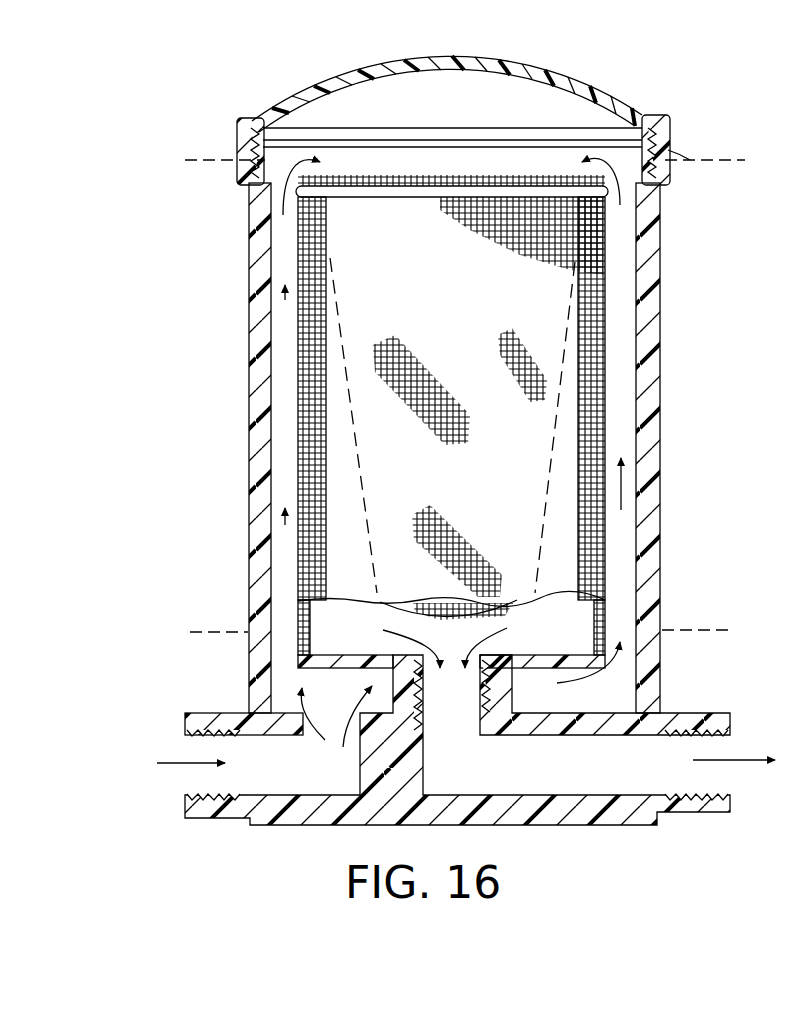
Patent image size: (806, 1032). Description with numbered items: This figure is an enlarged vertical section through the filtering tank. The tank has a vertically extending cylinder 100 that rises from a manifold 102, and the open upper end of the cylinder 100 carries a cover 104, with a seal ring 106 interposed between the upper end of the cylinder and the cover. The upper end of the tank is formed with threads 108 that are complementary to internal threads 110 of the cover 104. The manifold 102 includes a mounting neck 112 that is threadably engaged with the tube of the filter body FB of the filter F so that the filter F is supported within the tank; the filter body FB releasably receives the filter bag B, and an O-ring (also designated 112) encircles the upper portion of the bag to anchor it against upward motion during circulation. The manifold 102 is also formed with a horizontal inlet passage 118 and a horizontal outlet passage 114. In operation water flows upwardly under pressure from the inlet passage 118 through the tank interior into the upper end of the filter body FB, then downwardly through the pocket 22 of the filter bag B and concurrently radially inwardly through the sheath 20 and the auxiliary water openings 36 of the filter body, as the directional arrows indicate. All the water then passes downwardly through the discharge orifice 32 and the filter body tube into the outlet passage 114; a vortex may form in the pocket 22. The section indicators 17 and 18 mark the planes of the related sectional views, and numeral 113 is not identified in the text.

The cylinder 100 is at (652, 338).
The manifold 102 is at (557, 826).
The cover 104 is at (568, 85).
The seal ring 106 is at (636, 118).
The threads 108 is at (668, 157).
The internal threads 110 is at (270, 183).
The mounting neck 112 is at (370, 197).
The threaded boss 113 is at (503, 687).
The outlet passage 114 is at (657, 740).
The inlet passage 118 is at (252, 790).
The section line 17 is at (188, 150).
The section line 18 is at (205, 624).
The sheath 20 is at (463, 474).
The pocket 22 is at (512, 612).
The discharge orifice 32 is at (423, 646).
The auxiliary water openings 36 is at (608, 624).
The filter bag B is at (607, 290).
The filter F is at (455, 270).
The filter body FB is at (600, 600).